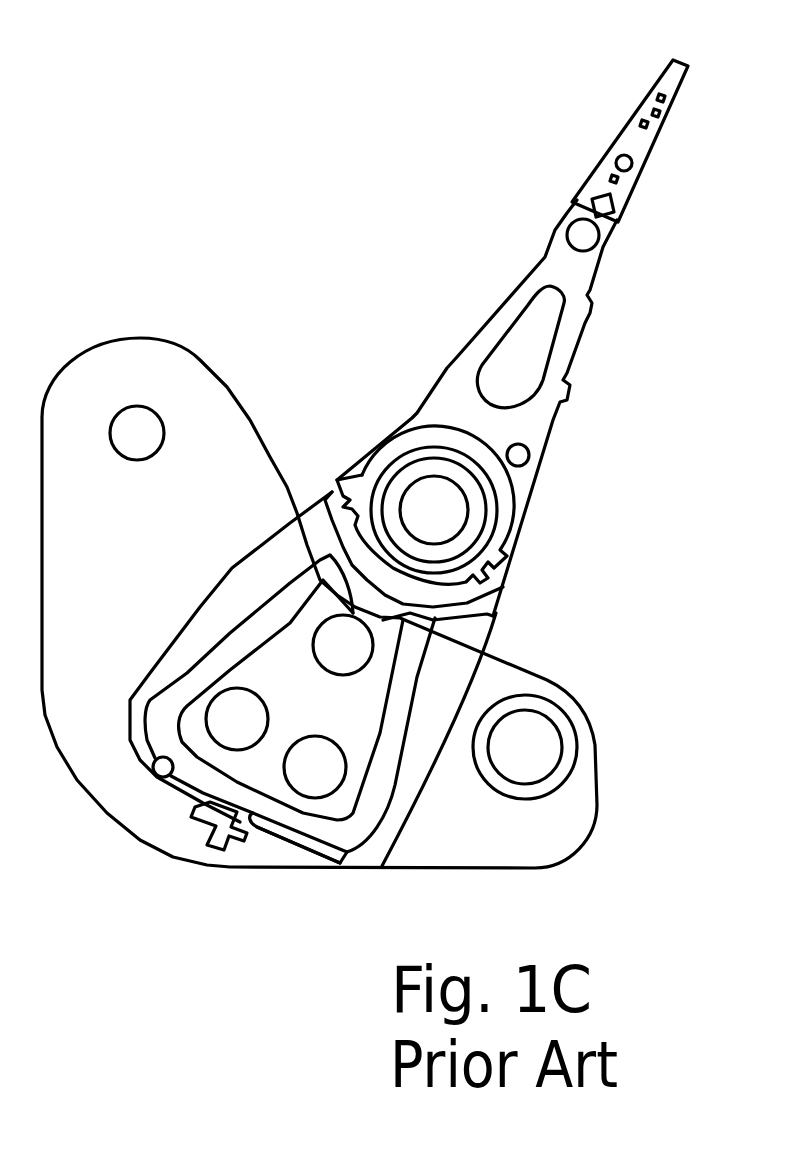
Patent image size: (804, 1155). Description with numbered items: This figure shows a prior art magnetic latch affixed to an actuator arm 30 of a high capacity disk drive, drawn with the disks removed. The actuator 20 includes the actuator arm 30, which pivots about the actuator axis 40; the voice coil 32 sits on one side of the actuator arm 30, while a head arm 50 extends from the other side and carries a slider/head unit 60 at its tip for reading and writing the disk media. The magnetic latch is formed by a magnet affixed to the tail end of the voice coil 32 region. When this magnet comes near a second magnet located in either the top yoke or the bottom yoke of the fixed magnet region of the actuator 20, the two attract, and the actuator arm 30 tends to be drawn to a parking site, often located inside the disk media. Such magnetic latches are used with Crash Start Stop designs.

The actuator 20 is at (173, 340).
The actuator arm 30 is at (478, 632).
The voice coil 32 is at (396, 773).
The actuator axis 40 is at (462, 528).
The head arm 50 is at (437, 378).
The slider/head unit 60 is at (647, 157).